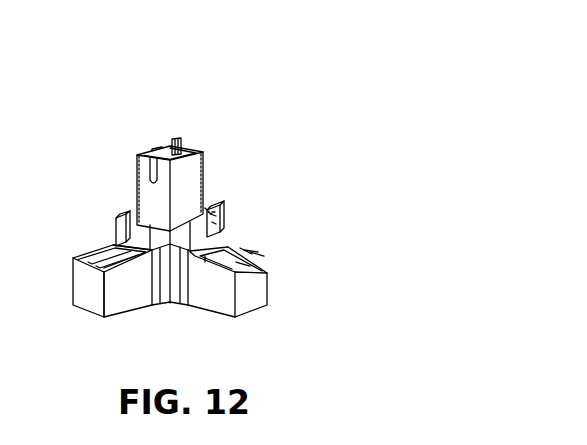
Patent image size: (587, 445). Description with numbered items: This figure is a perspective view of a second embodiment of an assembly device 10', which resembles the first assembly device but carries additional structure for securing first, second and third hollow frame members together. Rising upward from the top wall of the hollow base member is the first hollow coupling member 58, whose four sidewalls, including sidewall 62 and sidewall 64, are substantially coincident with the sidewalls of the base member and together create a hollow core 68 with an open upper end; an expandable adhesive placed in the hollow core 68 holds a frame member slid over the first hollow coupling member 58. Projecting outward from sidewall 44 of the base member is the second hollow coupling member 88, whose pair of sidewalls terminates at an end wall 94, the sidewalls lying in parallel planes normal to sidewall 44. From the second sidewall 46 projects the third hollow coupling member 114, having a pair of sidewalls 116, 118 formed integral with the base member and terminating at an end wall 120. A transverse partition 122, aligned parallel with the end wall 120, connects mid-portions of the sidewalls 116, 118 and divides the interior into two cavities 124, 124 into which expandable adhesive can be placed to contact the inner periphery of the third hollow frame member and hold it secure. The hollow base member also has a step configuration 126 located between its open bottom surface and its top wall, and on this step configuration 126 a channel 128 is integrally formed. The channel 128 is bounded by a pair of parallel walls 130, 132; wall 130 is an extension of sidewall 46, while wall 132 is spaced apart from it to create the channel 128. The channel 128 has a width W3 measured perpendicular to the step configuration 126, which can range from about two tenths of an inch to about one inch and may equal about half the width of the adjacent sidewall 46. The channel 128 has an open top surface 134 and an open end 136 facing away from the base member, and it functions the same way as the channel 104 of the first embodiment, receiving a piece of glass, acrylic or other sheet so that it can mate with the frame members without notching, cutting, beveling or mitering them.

The assembly device 10' is at (268, 85).
The sidewall 44 is at (162, 233).
The sidewall 46 is at (178, 236).
The first hollow coupling member 58 is at (133, 183).
The sidewall 62 is at (163, 213).
The sidewall 64 is at (198, 200).
The hollow core 68 is at (177, 137).
The second hollow coupling member 88 is at (84, 257).
The end wall 94 is at (99, 300).
The channel 104 is at (125, 216).
The third hollow coupling member 114 is at (262, 253).
The sidewall 116 is at (205, 262).
The sidewall 118 is at (253, 252).
The end wall 120 is at (264, 300).
The transverse partition 122 is at (250, 265).
The cavities 124 is at (240, 247).
The step configuration 126 is at (178, 258).
The channel 128 is at (216, 215).
The wall 130 is at (220, 220).
The wall 132 is at (212, 208).
The open top surface 134 is at (206, 212).
The open end 136 is at (215, 224).
The width W3 is at (223, 210).